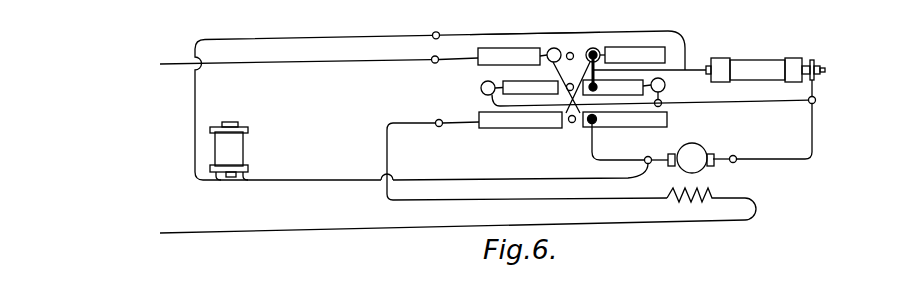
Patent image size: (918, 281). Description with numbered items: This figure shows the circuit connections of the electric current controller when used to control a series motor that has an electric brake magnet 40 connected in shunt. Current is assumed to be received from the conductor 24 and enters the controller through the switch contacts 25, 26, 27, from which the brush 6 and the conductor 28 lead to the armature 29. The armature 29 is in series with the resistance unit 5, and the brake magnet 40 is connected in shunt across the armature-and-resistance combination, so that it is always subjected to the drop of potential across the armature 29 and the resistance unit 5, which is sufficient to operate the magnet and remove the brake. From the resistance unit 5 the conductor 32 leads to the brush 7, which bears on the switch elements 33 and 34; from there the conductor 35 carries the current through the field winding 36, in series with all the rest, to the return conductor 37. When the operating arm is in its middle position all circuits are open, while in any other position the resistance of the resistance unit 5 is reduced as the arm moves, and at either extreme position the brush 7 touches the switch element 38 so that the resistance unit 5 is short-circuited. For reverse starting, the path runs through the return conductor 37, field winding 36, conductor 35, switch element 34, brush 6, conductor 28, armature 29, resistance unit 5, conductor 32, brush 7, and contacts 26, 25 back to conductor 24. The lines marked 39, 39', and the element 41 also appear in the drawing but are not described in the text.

The resistance unit 5 is at (760, 63).
The brush 6 is at (588, 125).
The brush 7 is at (604, 63).
The conductor 24 is at (377, 62).
The switch contact 25 is at (489, 60).
The switch contact 26 is at (551, 62).
The switch contact 27 is at (668, 118).
The conductor 28 is at (598, 154).
The armature 29 is at (698, 153).
The conductor 32 is at (672, 68).
The switch element 33 is at (596, 48).
The switch element 34 is at (496, 120).
The conductor 35 is at (393, 200).
The field winding 36 is at (713, 192).
The return conductor 37 is at (262, 223).
The switch element 38 is at (665, 85).
The supply conductor 39 is at (431, 101).
The supply conductor branch 39' is at (535, 20).
The electric brake magnet 40 is at (236, 153).
The contact 41 is at (484, 94).